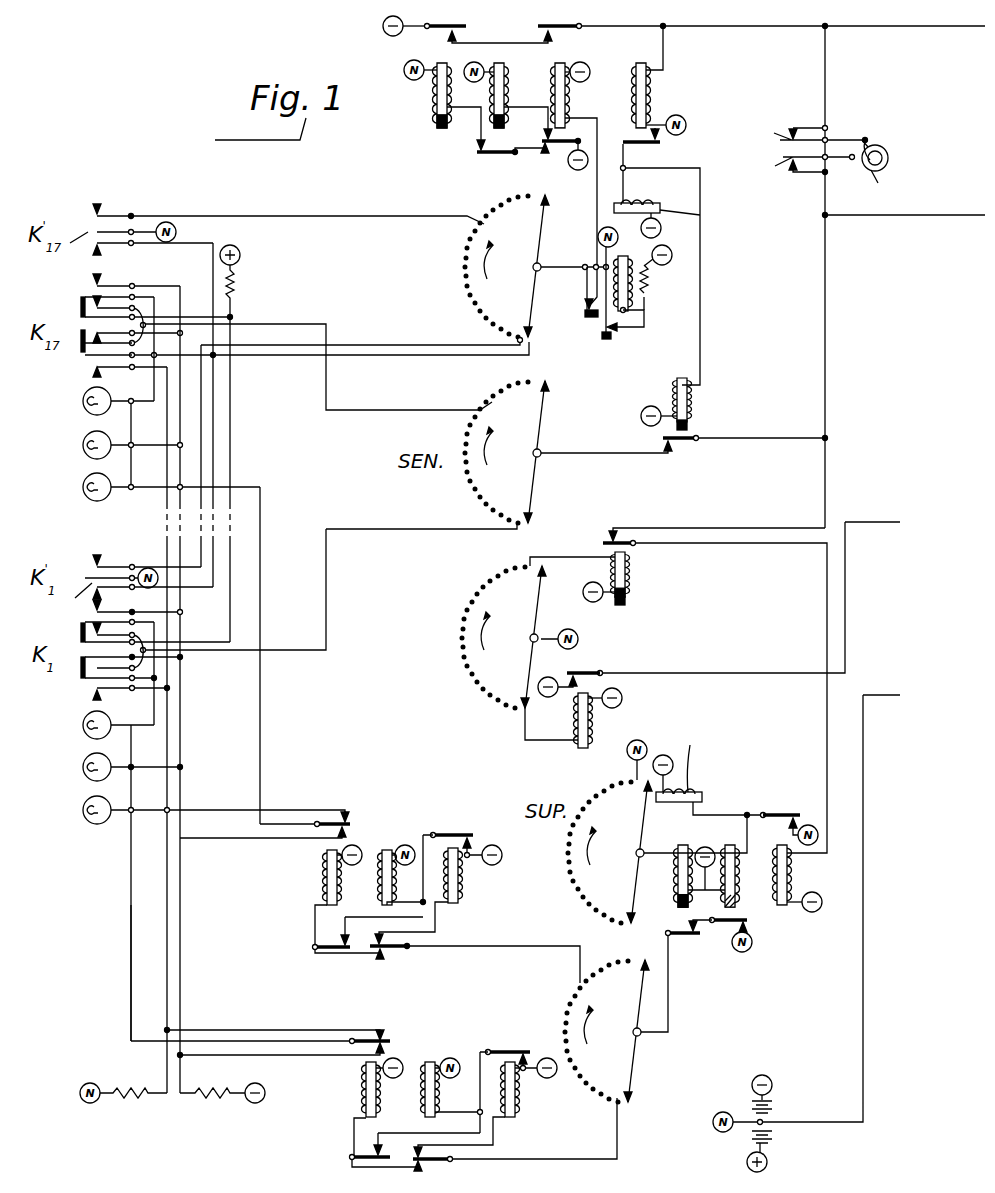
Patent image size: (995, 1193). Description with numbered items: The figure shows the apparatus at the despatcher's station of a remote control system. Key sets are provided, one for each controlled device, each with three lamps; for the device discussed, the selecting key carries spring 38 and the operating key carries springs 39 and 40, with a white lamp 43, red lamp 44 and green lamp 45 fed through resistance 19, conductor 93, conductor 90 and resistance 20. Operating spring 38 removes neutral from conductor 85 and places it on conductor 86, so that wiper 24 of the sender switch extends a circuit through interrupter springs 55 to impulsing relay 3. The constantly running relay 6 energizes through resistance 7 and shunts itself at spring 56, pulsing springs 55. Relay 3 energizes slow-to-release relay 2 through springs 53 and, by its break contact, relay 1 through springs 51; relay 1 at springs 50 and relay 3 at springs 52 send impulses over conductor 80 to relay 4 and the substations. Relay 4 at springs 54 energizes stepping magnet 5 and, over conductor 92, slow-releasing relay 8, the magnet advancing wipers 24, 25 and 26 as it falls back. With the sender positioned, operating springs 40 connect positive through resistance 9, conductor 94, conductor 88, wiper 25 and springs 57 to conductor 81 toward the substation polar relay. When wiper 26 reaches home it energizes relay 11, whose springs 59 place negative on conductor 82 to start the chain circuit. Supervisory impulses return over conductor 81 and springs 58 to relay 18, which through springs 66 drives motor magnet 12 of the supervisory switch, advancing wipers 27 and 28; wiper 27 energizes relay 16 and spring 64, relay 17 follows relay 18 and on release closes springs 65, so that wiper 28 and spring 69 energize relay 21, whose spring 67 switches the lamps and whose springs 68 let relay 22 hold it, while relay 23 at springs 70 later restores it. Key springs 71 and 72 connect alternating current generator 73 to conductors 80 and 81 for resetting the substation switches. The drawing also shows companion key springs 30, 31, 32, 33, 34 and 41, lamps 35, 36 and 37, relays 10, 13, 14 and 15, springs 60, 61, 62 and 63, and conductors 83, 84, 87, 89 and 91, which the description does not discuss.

The relay 1 is at (437, 100).
The slow-to-release relay 2 is at (504, 70).
The impulsing relay 3 is at (562, 64).
The relay 4 is at (641, 63).
The magnet 5 is at (655, 203).
The impulsing relay 6 is at (623, 328).
The resistance 7 is at (650, 290).
The slow-releasing relay 8 is at (681, 378).
The resistance 9 is at (238, 280).
The relay 10 is at (626, 595).
The relay 11 is at (588, 740).
The motor magnet 12 is at (690, 793).
The relay 13 is at (327, 852).
The relay 14 is at (392, 886).
The relay 15 is at (460, 889).
The relay 16 is at (681, 845).
The relay 17 is at (728, 845).
The relay 18 is at (778, 845).
The resistance 19 is at (145, 1098).
The resistance 20 is at (218, 1098).
The relay 21 is at (366, 1092).
The relay 22 is at (435, 1062).
The relay 23 is at (520, 1100).
The wiper 24 is at (533, 285).
The wiper 25 is at (532, 475).
The wiper 26 is at (528, 660).
The wiper 27 is at (634, 880).
The wiper 28 is at (633, 1058).
The key contact 30 is at (95, 246).
The key contact 31 is at (95, 284).
The key contact 32 is at (95, 310).
The key contact 33 is at (92, 340).
The key contact 34 is at (95, 370).
The lamp 35 is at (108, 398).
The lamp 36 is at (83, 445).
The lamp 37 is at (83, 487).
The spring 38 is at (95, 566).
The springs 39 is at (96, 612).
The springs 40 is at (93, 636).
The key contact 41 is at (92, 670).
The white lamp 43 is at (106, 722).
The red lamp 44 is at (83, 766).
The green lamp 45 is at (83, 809).
The springs 50 is at (440, 26).
The springs 51 is at (490, 154).
The springs 52 is at (548, 26).
The springs 53 is at (560, 145).
The springs 54 is at (655, 144).
The interrupter springs 55 is at (585, 296).
The spring 56 is at (600, 334).
The springs 57 is at (685, 442).
The springs 58 is at (635, 546).
The springs 59 is at (590, 671).
The relay contact 60 is at (336, 821).
The relay contact 61 is at (325, 950).
The relay contact 62 is at (392, 950).
The relay contact 63 is at (445, 835).
The spring 64 is at (685, 938).
The springs 65 is at (748, 920).
The springs 66 is at (798, 811).
The spring 67 is at (366, 1040).
The springs 68 is at (350, 1158).
The spring 69 is at (440, 1162).
The springs 70 is at (508, 1052).
The key springs 71 is at (798, 126).
The key springs 72 is at (795, 175).
The alternating current generator 73 is at (870, 145).
The conductor 80 is at (884, 30).
The conductor 81 is at (886, 217).
The conductor 82 is at (890, 525).
The conductor 83 is at (388, 214).
The conductor 84 is at (321, 317).
The conductor 85 is at (392, 344).
The conductor 86 is at (396, 357).
The conductor 87 is at (260, 518).
The conductor 88 is at (412, 528).
The conductor 89 is at (170, 712).
The conductor 90 is at (182, 746).
The conductor 91 is at (827, 636).
The conductor 92 is at (700, 270).
The conductor 93 is at (130, 915).
The conductor 94 is at (232, 440).